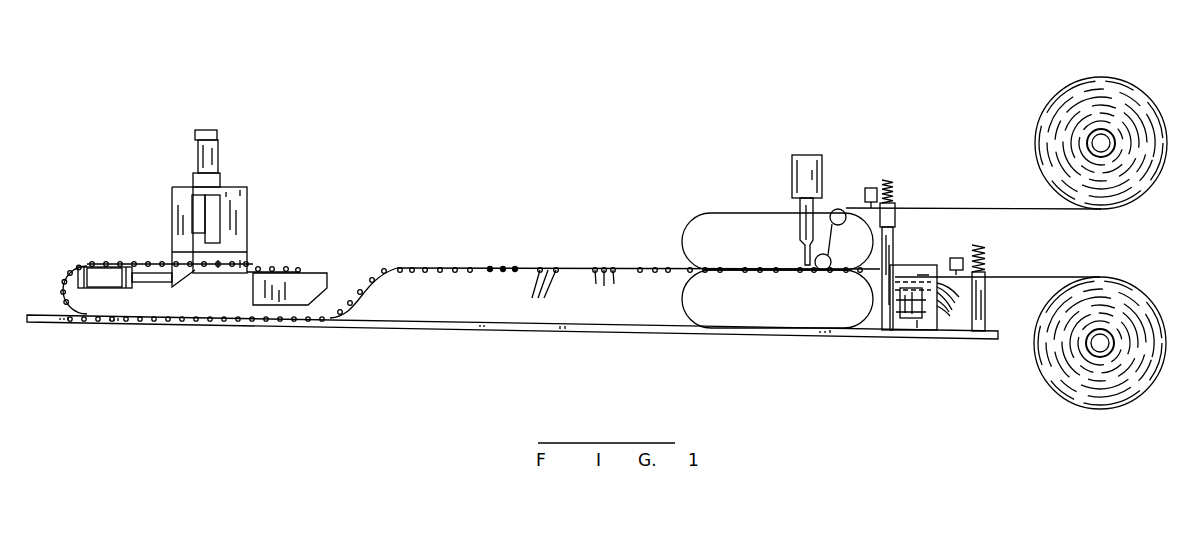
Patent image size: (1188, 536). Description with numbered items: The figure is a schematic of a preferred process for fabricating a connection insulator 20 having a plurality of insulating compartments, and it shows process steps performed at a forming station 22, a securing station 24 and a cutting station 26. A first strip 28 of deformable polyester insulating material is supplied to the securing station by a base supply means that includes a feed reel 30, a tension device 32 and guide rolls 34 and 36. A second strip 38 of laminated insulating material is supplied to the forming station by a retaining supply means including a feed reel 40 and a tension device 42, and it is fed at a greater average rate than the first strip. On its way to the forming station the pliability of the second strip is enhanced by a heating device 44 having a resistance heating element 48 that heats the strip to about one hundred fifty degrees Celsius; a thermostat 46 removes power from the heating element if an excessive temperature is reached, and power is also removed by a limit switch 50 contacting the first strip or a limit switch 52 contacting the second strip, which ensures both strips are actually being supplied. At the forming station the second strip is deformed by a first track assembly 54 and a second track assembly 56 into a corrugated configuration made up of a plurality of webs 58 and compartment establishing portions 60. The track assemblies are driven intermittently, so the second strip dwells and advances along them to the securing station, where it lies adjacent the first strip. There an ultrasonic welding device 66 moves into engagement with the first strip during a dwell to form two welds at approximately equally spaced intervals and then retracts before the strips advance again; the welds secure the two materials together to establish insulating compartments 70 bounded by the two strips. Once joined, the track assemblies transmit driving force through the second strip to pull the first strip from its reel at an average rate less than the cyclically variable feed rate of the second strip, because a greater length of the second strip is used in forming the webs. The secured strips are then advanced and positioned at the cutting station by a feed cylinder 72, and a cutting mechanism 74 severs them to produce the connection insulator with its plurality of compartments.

The connection insulator 20 is at (276, 266).
The forming station 22 is at (860, 286).
The securing station 24 is at (795, 284).
The cutting station 26 is at (214, 282).
The first strip 28 is at (1032, 208).
The feed reel 30 is at (1105, 130).
The tension device 32 is at (896, 207).
The guide roll 34 is at (838, 209).
The guide roll 36 is at (823, 271).
The second strip 38 is at (1019, 277).
The feed reel 40 is at (1102, 336).
The tension device 42 is at (993, 277).
The heating device 44 is at (908, 310).
The thermostat 46 is at (917, 348).
The resistance heating element 48 is at (932, 330).
The limit switch 50 is at (870, 188).
The limit switch 52 is at (958, 258).
The first track assembly 54 is at (683, 228).
The second track assembly 56 is at (682, 308).
The webs 58 is at (607, 288).
The compartment establishing portions 60 is at (515, 267).
The ultrasonic welding device 66 is at (792, 175).
The insulating compartments 70 is at (536, 294).
The feed cylinder 72 is at (97, 281).
The cutting mechanism 74 is at (243, 183).